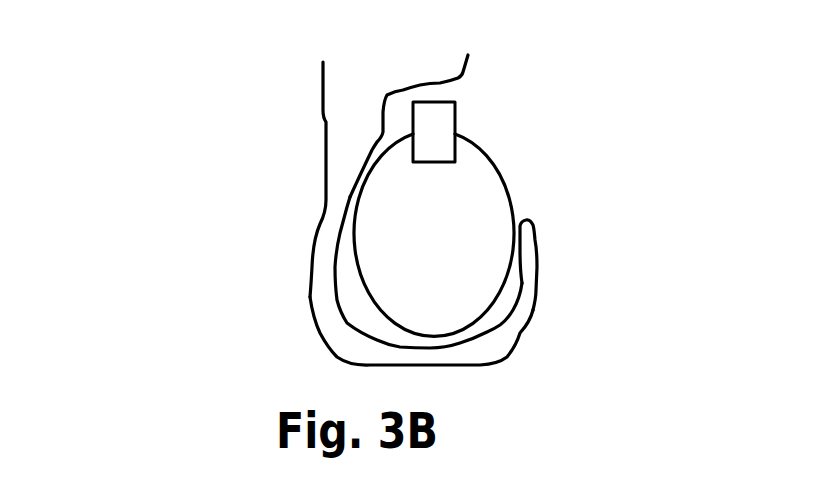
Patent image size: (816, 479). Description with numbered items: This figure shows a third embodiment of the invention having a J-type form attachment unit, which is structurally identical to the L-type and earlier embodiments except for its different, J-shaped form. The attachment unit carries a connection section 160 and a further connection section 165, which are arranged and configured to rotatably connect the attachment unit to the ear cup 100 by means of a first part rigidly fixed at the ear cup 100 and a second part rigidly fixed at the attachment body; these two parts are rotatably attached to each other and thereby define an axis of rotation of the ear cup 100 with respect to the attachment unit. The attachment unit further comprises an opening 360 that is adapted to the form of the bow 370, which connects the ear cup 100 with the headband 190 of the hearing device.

The headband 190 is at (362, 74).
The bow 370 is at (330, 335).
The further connection section 165 is at (522, 232).
The ear cup 100 is at (463, 298).
The opening 360 is at (450, 93).
The connection section 160 is at (350, 238).